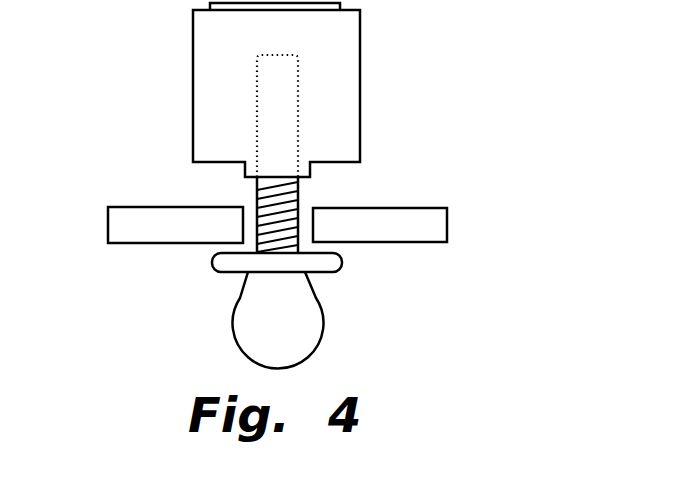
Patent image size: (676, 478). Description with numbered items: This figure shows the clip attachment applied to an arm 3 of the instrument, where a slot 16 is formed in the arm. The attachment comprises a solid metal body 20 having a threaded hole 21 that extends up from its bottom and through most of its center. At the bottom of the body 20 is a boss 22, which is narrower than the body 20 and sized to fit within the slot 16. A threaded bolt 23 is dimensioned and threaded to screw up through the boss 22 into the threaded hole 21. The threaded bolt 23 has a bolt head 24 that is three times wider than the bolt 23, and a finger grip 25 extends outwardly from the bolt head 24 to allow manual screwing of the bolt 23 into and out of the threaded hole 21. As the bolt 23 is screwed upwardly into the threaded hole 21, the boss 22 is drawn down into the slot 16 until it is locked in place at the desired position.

The arm 3 is at (427, 225).
The slot 16 is at (306, 218).
The solid metal body 20 is at (343, 43).
The threaded hole 21 is at (280, 100).
The boss 22 is at (313, 173).
The threaded bolt 23 is at (268, 207).
The bolt head 24 is at (333, 263).
The finger grip 25 is at (307, 332).